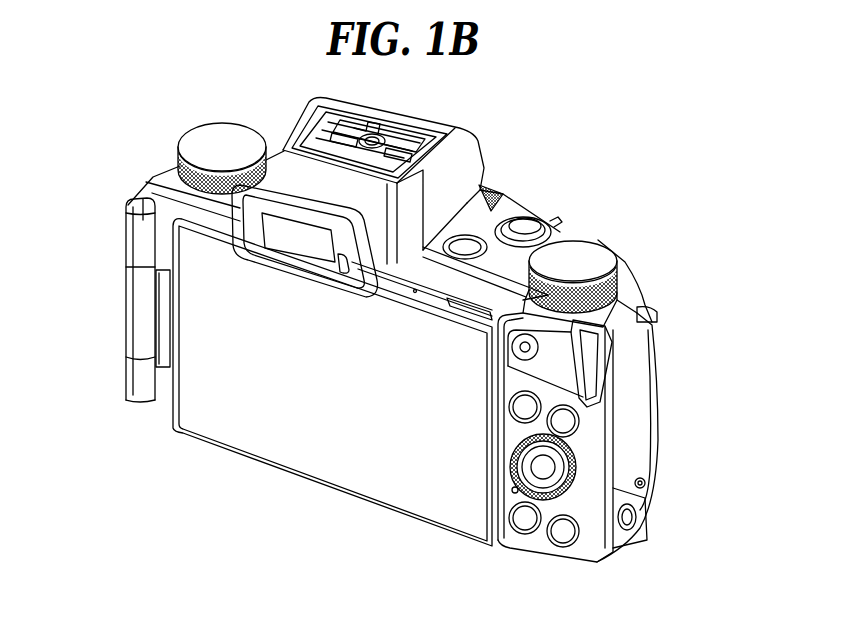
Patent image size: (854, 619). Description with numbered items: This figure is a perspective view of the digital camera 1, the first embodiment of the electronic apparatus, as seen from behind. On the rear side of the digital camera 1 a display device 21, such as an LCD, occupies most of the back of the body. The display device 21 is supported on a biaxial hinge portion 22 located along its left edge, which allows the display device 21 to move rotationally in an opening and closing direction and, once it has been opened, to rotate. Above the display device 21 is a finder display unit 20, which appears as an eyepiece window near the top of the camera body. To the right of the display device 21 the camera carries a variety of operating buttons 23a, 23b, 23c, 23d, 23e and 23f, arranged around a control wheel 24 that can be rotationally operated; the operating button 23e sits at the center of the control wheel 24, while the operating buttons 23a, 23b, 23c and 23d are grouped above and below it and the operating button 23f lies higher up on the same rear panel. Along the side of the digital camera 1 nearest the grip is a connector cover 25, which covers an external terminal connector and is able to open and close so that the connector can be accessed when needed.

The digital camera 1 is at (630, 192).
The finder display unit 20 is at (301, 233).
The display device 21 is at (276, 402).
The biaxial hinge portion 22 is at (147, 341).
The operating button 23a is at (522, 408).
The operating button 23b is at (562, 427).
The operating button 23c is at (524, 519).
The operating button 23d is at (559, 532).
The operating button 23e is at (548, 470).
The operating button 23f is at (534, 354).
The control wheel 24 is at (523, 476).
The connector cover 25 is at (630, 428).